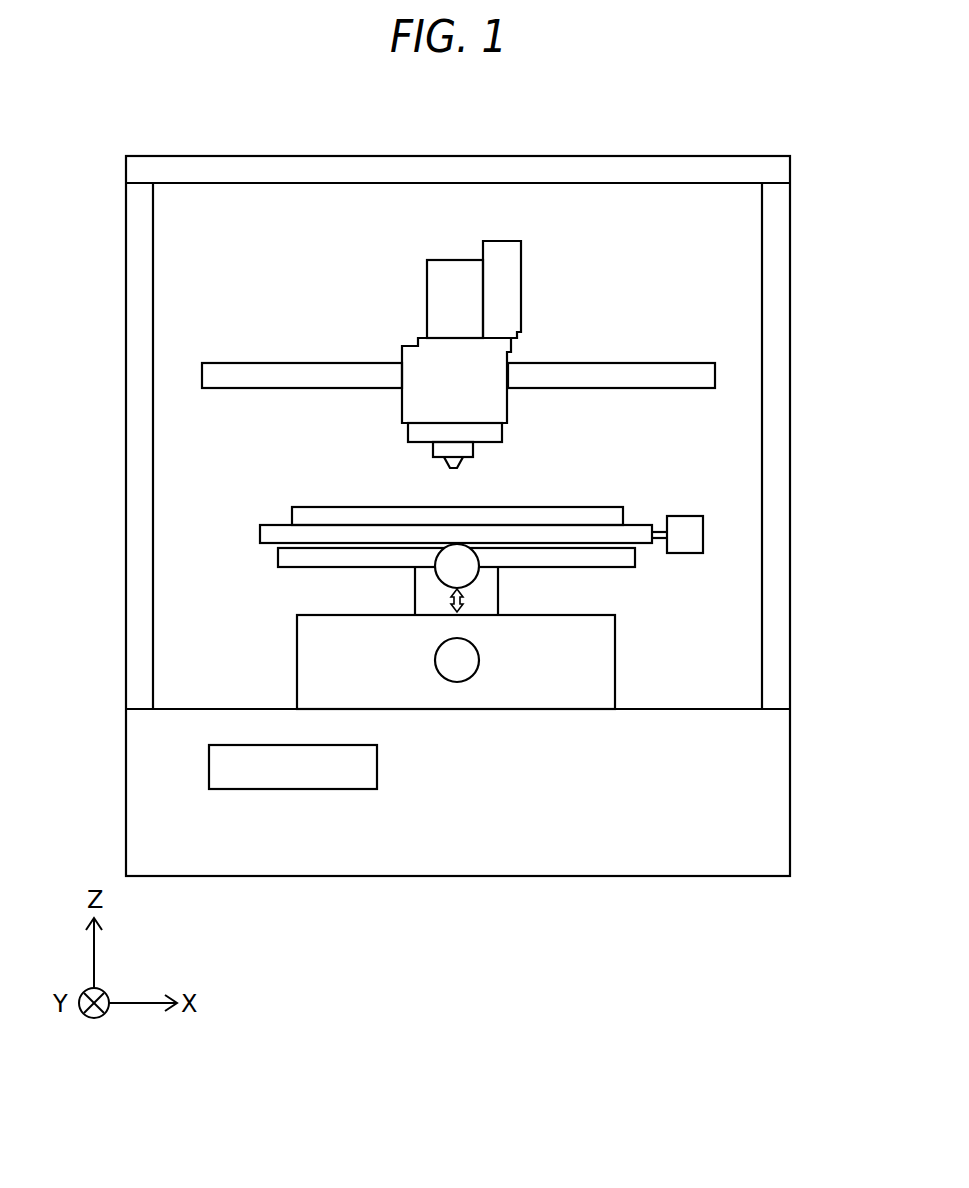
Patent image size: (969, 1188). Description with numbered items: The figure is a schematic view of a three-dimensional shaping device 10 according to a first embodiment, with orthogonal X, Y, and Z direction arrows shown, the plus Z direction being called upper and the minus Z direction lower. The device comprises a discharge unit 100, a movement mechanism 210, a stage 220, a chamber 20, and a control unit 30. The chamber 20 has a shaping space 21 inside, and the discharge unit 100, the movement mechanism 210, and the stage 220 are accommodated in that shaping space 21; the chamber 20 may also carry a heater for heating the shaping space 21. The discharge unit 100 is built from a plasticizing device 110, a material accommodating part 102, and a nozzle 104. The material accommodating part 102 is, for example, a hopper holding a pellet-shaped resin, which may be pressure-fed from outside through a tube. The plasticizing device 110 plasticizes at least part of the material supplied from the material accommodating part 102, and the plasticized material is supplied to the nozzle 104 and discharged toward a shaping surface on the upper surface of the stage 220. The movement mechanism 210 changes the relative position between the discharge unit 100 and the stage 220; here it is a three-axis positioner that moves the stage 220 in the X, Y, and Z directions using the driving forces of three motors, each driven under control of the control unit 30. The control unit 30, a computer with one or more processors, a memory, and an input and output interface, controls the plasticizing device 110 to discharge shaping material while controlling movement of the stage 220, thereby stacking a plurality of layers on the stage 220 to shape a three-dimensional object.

The three-dimensional shaping device 10 is at (165, 124).
The chamber 20 is at (126, 422).
The shaping space 21 is at (703, 658).
The control unit 30 is at (209, 765).
The discharge unit 100 is at (385, 259).
The material accommodating part 102 is at (521, 283).
The nozzle 104 is at (463, 462).
The plasticizing device 110 is at (402, 349).
The movement mechanism 210 is at (282, 525).
The stage 220 is at (600, 505).